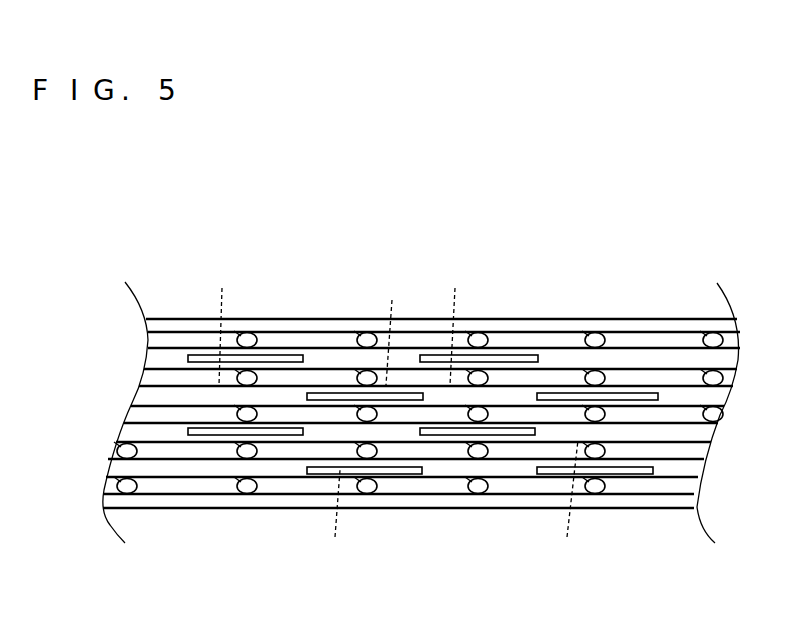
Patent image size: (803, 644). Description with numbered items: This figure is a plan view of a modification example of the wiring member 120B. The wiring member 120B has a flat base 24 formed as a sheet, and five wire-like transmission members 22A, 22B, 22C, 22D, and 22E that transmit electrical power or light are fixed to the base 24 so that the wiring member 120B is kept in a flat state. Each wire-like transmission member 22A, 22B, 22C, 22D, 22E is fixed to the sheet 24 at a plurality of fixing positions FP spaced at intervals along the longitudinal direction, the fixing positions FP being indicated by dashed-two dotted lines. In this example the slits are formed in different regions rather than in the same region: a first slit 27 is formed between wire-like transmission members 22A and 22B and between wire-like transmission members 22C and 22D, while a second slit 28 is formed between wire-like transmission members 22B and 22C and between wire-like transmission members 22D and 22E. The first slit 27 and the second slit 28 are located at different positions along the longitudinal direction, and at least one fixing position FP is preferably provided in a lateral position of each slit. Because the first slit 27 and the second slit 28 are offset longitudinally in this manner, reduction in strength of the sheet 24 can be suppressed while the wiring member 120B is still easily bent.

The wiring member 120B is at (323, 298).
The wire-like transmission member 22A is at (153, 334).
The wire-like transmission member 22B is at (147, 377).
The wire-like transmission member 22C is at (132, 410).
The wire-like transmission member 22D is at (115, 445).
The wire-like transmission member 22E is at (107, 483).
The base 24 is at (182, 502).
The first slit 27 is at (300, 428).
The second slit 28 is at (419, 392).
The fixing position FP is at (394, 414).